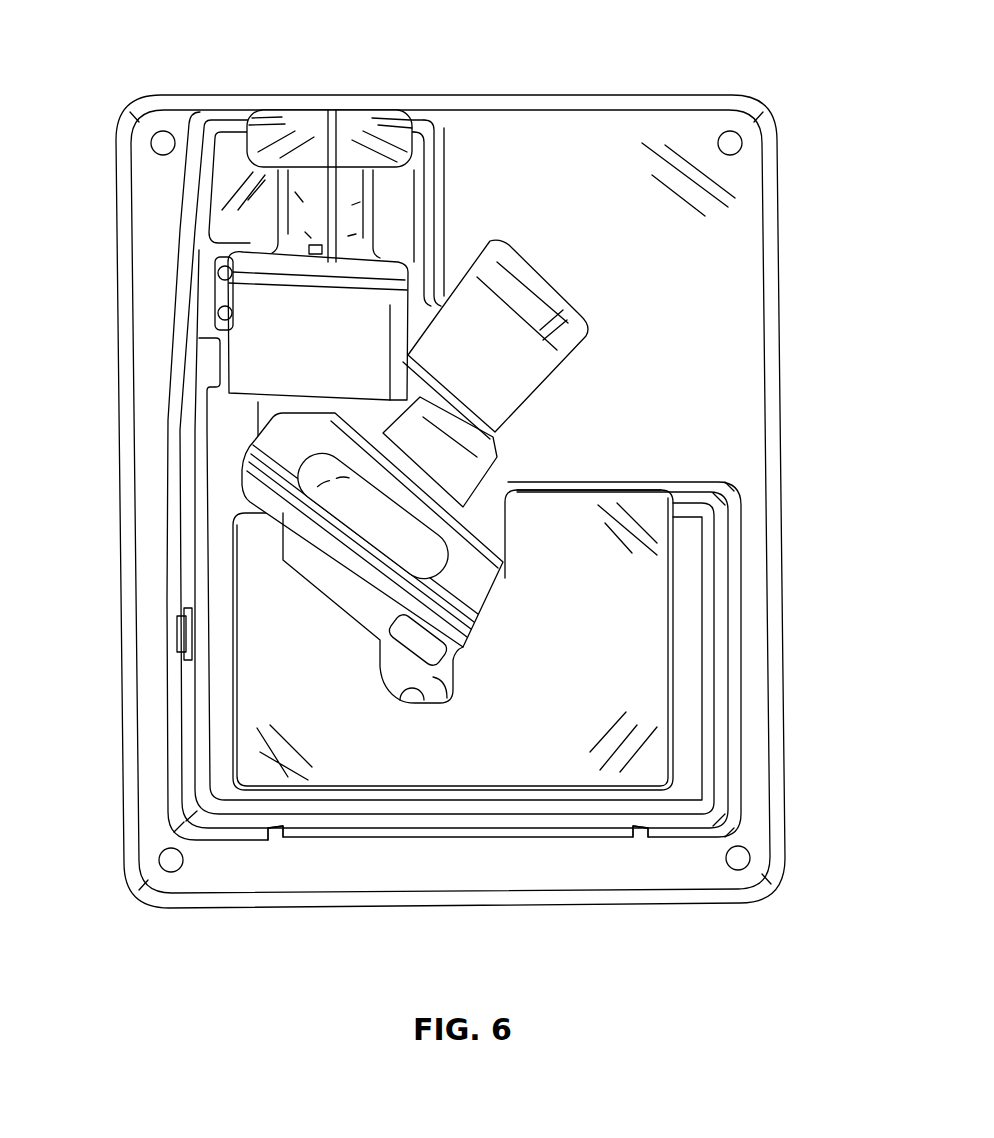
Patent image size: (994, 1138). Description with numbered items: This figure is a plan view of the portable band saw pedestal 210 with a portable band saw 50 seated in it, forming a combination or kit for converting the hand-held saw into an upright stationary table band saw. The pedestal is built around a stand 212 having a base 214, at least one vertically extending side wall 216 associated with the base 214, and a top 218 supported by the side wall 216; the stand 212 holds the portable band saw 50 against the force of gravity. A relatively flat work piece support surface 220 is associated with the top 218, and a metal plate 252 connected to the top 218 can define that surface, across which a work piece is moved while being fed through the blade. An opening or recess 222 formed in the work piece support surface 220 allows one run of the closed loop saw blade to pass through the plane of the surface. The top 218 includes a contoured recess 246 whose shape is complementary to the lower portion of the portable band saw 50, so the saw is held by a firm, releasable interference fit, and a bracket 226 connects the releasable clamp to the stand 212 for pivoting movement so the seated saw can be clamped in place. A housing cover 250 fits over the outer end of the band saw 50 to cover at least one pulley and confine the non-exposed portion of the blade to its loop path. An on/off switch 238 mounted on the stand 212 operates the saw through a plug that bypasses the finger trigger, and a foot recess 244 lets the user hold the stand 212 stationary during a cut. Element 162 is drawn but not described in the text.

The portable band saw pedestal 210 is at (299, 56).
The stand 212 is at (651, 86).
The base 214 is at (741, 300).
The side wall 216 is at (186, 544).
The top 218 is at (216, 495).
The work piece support surface 220 is at (268, 697).
The opening or recess 222 is at (428, 683).
The bracket 226 is at (218, 293).
The on/off switch 238 is at (178, 641).
The foot recess 244 is at (634, 831).
The contoured recess 246 is at (512, 572).
The housing cover 250 is at (466, 606).
The metal plate 252 is at (676, 725).
The portable band saw 50 is at (552, 387).
The cartridge holder 162 is at (450, 693).